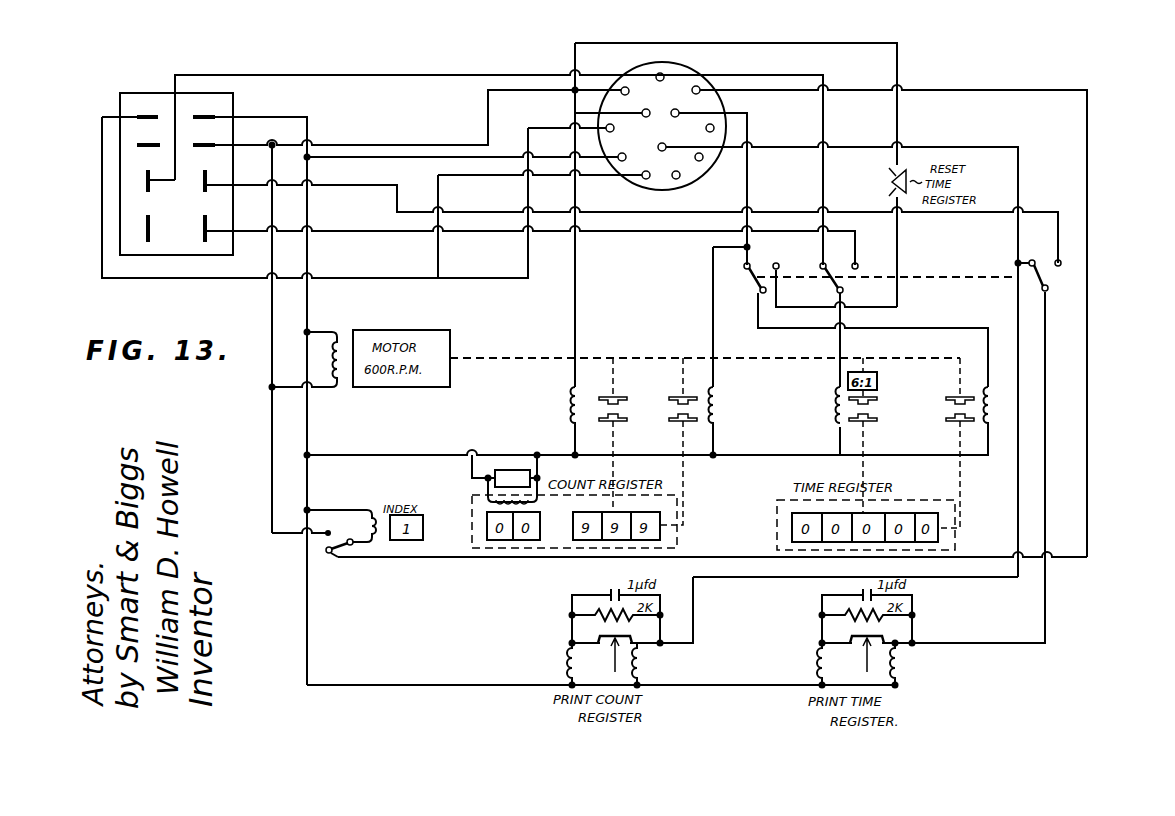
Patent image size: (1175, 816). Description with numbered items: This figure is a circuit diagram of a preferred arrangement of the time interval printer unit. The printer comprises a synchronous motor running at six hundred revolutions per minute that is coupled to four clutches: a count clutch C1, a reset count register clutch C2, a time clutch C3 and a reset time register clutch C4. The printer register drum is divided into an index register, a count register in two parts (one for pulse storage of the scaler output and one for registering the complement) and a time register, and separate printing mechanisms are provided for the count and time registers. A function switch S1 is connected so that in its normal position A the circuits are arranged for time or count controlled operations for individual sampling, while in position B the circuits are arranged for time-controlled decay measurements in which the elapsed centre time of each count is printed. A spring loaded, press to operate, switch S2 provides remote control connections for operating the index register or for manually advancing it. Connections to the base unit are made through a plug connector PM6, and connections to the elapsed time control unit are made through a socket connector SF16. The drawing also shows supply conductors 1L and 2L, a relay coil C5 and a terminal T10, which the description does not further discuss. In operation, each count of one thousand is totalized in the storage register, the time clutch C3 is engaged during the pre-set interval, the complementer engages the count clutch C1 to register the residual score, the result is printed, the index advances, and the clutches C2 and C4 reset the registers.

The socket connector SF16 is at (175, 165).
The plug connector PM6 is at (706, 71).
The line conductor 2L is at (400, 137).
The line conductor 1L is at (601, 414).
The count clutch C1 is at (544, 421).
The reset count register clutch C2 is at (739, 421).
The time clutch C3 is at (875, 406).
The reset time register clutch C4 is at (992, 405).
The suppression relay coil C5 is at (490, 498).
The function switch S1 is at (899, 273).
The spring loaded press-to-operate switch S2 is at (341, 548).
The terminal T10 is at (839, 602).